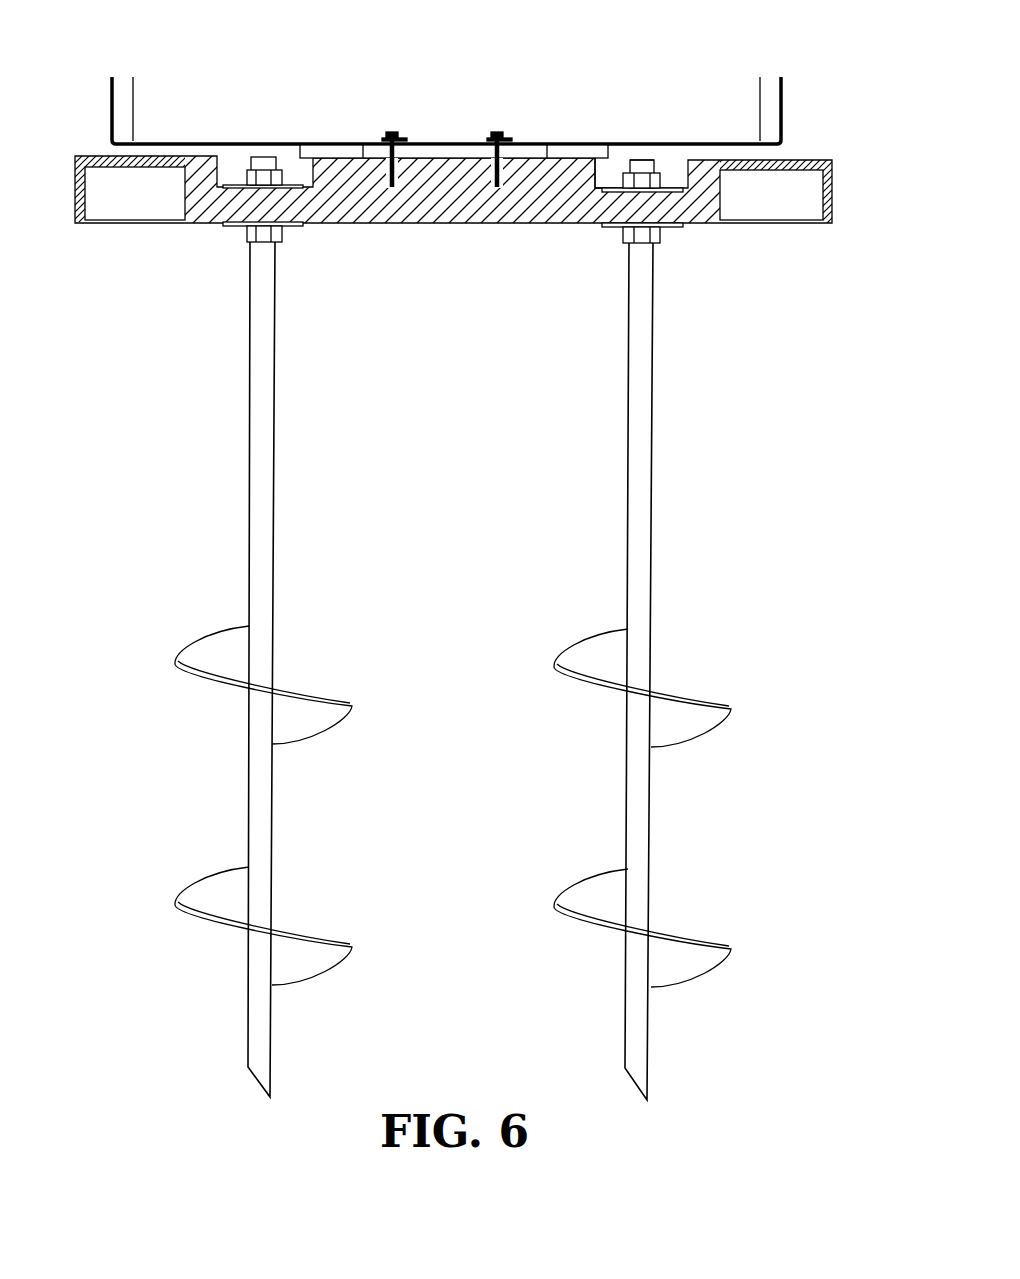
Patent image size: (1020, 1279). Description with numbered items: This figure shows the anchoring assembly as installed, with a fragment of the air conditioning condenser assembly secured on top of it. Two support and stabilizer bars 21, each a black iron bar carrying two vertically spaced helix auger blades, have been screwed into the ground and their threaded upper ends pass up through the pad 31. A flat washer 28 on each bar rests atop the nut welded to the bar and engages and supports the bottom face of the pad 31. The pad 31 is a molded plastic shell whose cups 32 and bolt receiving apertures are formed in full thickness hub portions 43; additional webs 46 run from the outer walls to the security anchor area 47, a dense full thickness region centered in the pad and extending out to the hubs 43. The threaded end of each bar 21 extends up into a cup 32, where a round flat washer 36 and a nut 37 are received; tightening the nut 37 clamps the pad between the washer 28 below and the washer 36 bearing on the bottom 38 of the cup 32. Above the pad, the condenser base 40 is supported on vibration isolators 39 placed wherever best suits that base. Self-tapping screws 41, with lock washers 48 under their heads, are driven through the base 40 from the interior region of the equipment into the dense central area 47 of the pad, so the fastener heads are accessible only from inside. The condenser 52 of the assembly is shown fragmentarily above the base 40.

The support and stabilizer bar 21 is at (210, 407).
The flat washer 28 is at (607, 227).
The pad 31 is at (833, 190).
The recess or cup 32 is at (610, 173).
The round flat washer 36 is at (667, 190).
The nut 37 is at (645, 160).
The bottom of cup 38 is at (330, 200).
The vibration isolator 39 is at (312, 145).
The condenser base 40 is at (203, 140).
The self-tapping screw 41 is at (393, 133).
The full thickness hub portion 43 is at (215, 208).
The web 46 is at (133, 210).
The security anchor area 47 is at (447, 212).
The lock washer 48 is at (383, 138).
The condenser 52 is at (122, 93).